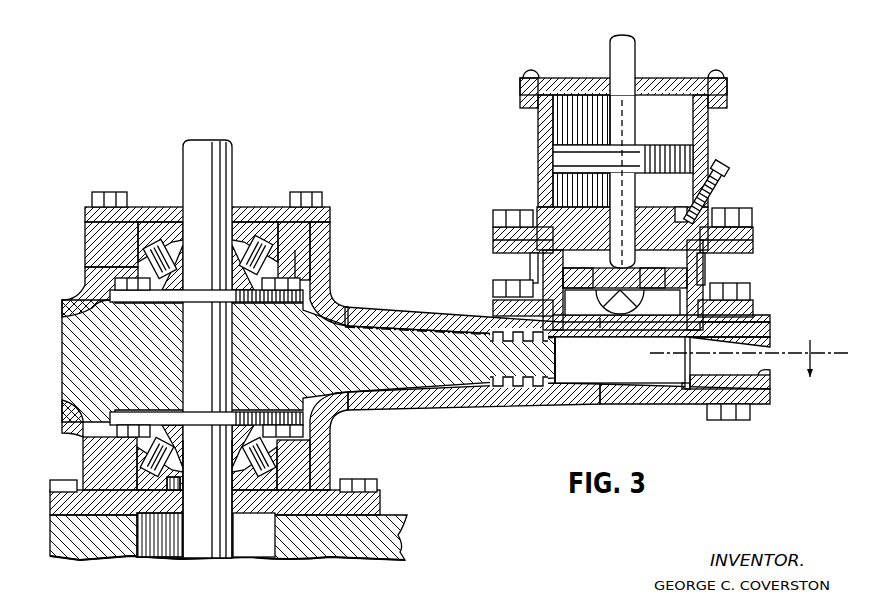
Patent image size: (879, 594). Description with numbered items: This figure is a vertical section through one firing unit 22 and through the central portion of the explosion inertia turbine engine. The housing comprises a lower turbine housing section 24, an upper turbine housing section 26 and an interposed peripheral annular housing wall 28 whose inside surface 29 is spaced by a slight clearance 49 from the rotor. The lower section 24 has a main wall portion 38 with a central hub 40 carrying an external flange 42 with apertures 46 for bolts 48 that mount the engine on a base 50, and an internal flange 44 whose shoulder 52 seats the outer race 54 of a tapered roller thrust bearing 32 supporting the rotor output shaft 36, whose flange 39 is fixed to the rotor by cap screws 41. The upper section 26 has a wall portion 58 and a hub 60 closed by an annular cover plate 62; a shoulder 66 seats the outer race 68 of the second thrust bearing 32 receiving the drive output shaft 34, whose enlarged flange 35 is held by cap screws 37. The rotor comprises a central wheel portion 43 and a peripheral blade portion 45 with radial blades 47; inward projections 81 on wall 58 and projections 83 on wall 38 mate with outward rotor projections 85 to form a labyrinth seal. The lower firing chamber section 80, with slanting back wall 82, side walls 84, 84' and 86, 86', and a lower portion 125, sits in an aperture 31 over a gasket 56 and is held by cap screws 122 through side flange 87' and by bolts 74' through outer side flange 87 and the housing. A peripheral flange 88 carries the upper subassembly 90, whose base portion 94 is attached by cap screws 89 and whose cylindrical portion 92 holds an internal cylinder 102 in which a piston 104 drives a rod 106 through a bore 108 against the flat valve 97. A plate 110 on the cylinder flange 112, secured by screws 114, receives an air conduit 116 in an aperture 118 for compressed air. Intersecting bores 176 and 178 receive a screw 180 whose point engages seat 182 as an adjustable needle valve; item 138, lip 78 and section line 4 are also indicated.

The section line 4— 4 is at (552, 313).
The firing unit 22 is at (663, 145).
The lower turbine housing section 24 is at (440, 406).
The upper turbine housing section 26 is at (211, 259).
The peripheral annular turbine housing wall 28 is at (770, 346).
The inside surface of the annular side housing ring 29 is at (690, 370).
The aperture 31 is at (560, 335).
The thrust bearing 32 is at (290, 243).
The drive output shaft 34 is at (232, 175).
The enlarged flange 35 is at (195, 297).
The rotor output shaft 36 is at (222, 548).
The cap screws 37 is at (118, 285).
The main annular laterally extending wall portion 38 is at (540, 404).
The flange 39 is at (188, 425).
The central hub section 40 is at (318, 455).
The cap screws 41 is at (122, 431).
The external flange 42 is at (380, 503).
The central wheel portion 43 is at (372, 400).
The internal flange 44 is at (206, 535).
The annular peripheral blade portion 45 is at (600, 404).
The apertures 46 is at (231, 550).
The radial blades 47 is at (643, 363).
The bolts 48 is at (367, 486).
The clearance 49 is at (683, 395).
The base or supporting means 50 is at (340, 548).
The shoulder 52 is at (180, 485).
The outer race 54 is at (148, 458).
The gasket 56 is at (560, 292).
The main annular laterally extending wall portion 58 is at (392, 316).
The central hub portion 60 is at (322, 262).
The annular cover plate 62 is at (255, 240).
The shoulder 66 is at (165, 245).
The outer race 68 is at (120, 245).
The bolts 74' is at (747, 350).
The tube lip 78 is at (772, 380).
The lower firing chamber section 80 is at (642, 312).
The annular projections 81 is at (495, 328).
The slanting back wall 82 is at (662, 308).
The annular projections 83 is at (515, 390).
The side wall 84 is at (622, 305).
The side wall 84' is at (578, 272).
The annular projections 85 is at (556, 352).
The side wall 86 is at (668, 362).
The side wall 86' is at (684, 285).
The outer side flange 87 is at (739, 303).
The side flange 87' is at (502, 299).
The peripheral laterally extending flange 88 is at (740, 240).
The cap screws 89 is at (738, 210).
The upper firing unit subassembly 90 is at (640, 145).
The cylindrical portion 92 is at (545, 170).
The base portion 94 is at (498, 223).
The combustion chamber flat valve 97 is at (625, 272).
The internal cylinder 102 is at (705, 120).
The piston 104 is at (608, 158).
The rod or plunger 106 is at (610, 185).
The bore 108 is at (620, 240).
The plate 110 is at (655, 85).
The annular peripheral cylinder flange 112 is at (715, 98).
The screws 114 is at (715, 74).
The air conduit 116 is at (620, 48).
The aperture 118 is at (625, 95).
The cap screws 122 is at (497, 285).
The portion of lower firing unit section 125 is at (598, 330).
The spacer 138 is at (708, 278).
The bore 176 is at (678, 210).
The bore 178 is at (708, 210).
The screw 180 is at (726, 165).
The seat 182 is at (652, 272).